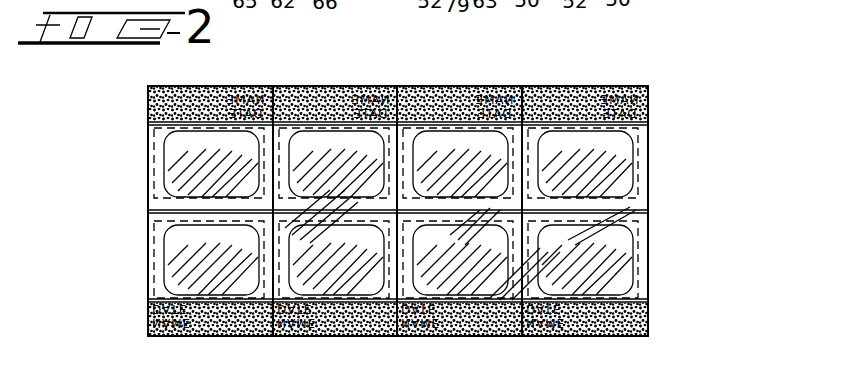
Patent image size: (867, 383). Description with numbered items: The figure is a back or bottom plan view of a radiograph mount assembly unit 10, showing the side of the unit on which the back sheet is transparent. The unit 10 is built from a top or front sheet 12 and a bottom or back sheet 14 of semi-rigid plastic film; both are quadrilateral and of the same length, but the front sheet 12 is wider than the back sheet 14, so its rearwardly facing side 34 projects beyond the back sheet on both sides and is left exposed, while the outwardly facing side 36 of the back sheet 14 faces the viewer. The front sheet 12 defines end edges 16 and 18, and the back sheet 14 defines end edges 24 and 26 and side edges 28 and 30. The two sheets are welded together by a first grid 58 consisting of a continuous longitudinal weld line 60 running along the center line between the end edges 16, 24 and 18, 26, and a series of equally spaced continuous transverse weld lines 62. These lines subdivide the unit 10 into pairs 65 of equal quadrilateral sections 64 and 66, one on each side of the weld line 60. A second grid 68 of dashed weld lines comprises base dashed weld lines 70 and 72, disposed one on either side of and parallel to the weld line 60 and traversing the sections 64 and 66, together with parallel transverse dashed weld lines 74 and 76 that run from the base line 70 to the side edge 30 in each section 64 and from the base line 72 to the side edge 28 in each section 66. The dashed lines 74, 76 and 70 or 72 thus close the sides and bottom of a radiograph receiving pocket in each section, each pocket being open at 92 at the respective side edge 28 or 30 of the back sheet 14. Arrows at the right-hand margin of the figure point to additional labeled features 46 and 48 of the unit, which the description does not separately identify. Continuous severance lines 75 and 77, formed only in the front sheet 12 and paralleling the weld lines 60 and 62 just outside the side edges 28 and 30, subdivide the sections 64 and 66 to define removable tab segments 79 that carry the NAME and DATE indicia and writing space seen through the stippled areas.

The radiograph mount assembly unit 10 is at (668, 76).
The front sheet 12 is at (562, 114).
The back sheet 14 is at (650, 193).
The end edge 16 is at (648, 118).
The end edge 18 is at (148, 320).
The end edge 24 is at (648, 276).
The end edge 26 is at (148, 152).
The side edge 28 is at (462, 300).
The side edge 30 is at (520, 125).
The rearwardly facing side 34 is at (447, 98).
The outwardly facing side 36 is at (648, 232).
The pocket wall 46 is at (656, 171).
The pocket wall 48 is at (656, 258).
The first type of weld line grid 58 is at (140, 215).
The longitudinal weld line 60 is at (160, 205).
The transverse weld lines 62 is at (272, 300).
The section 64 is at (648, 136).
The pair of sections 65 is at (256, 84).
The section 66 is at (500, 320).
The grid of dashed weld lines 68 is at (650, 157).
The dashed base weld line 70 is at (650, 210).
The dashed base weld line 72 is at (298, 238).
The transverse dashed weld line 74 is at (518, 252).
The severance line 75 is at (317, 123).
The transverse dashed weld line 76 is at (248, 312).
The severance line 77 is at (480, 305).
The tab segment 79 is at (648, 336).
The pocket opening 92 is at (331, 113).